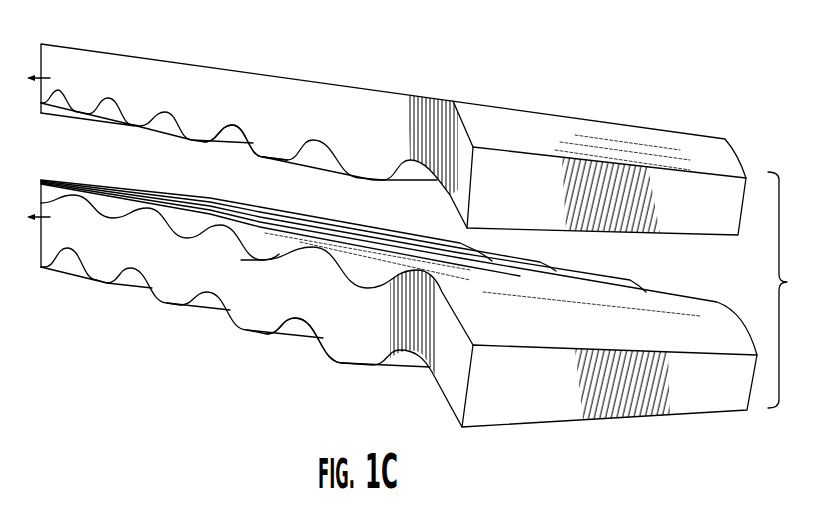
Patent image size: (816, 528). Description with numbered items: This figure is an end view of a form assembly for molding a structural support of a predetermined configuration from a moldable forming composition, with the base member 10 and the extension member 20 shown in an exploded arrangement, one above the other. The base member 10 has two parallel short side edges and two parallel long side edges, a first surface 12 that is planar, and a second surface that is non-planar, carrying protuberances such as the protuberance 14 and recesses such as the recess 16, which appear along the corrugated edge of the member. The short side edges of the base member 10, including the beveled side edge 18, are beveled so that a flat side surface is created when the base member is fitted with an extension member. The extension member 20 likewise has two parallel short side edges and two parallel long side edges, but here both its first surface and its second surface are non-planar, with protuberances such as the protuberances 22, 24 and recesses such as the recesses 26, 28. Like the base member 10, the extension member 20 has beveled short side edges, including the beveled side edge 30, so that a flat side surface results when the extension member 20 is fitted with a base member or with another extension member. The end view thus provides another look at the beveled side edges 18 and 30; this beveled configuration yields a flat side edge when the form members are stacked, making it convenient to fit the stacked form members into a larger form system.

The base member 10 is at (388, 133).
The first surface 12 is at (231, 70).
The protuberance 14 is at (270, 157).
The recess 16 is at (236, 123).
The beveled short side edge 18 is at (509, 196).
The extension member 20 is at (370, 325).
The protuberance 22 is at (147, 209).
The protuberance 24 is at (172, 307).
The recess 26 is at (268, 264).
The recess 28 is at (307, 317).
The beveled short side edge 30 is at (520, 390).